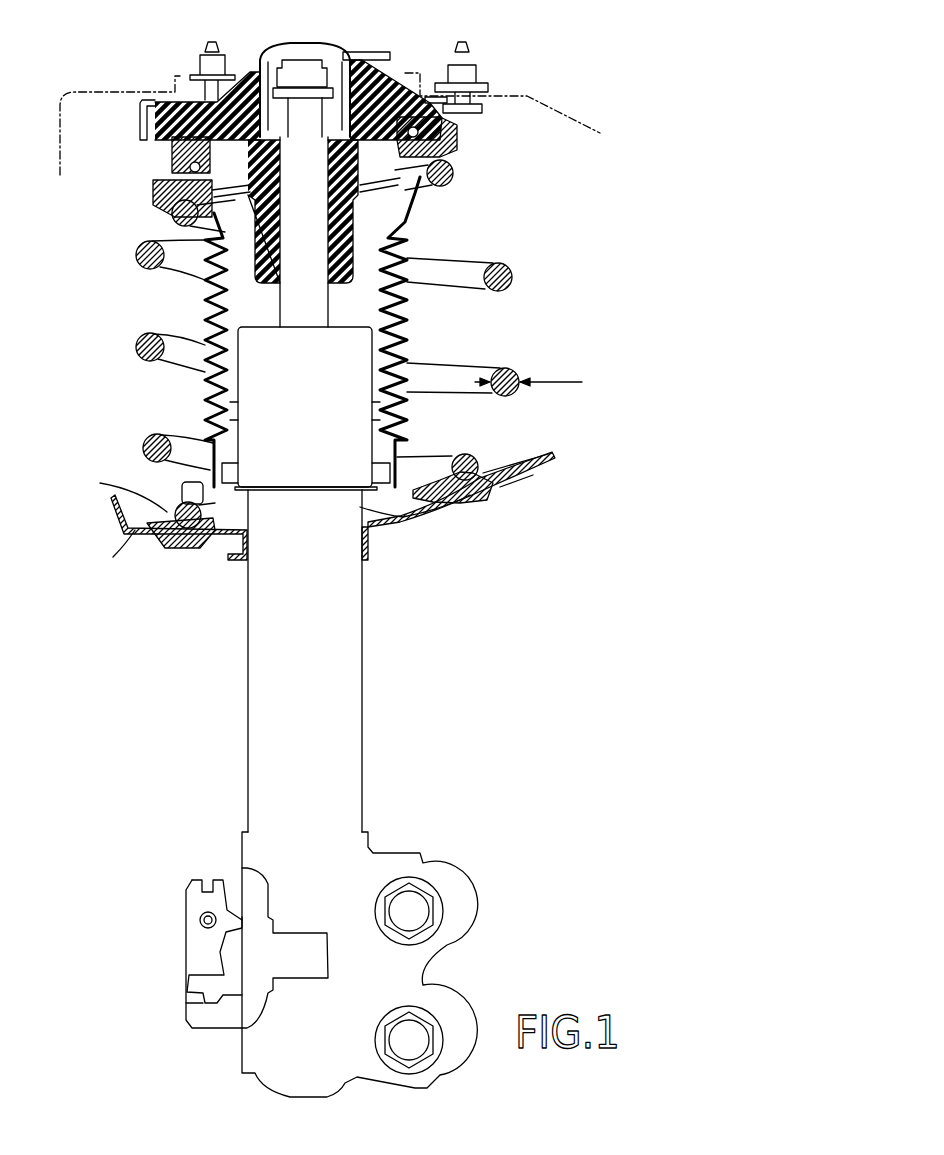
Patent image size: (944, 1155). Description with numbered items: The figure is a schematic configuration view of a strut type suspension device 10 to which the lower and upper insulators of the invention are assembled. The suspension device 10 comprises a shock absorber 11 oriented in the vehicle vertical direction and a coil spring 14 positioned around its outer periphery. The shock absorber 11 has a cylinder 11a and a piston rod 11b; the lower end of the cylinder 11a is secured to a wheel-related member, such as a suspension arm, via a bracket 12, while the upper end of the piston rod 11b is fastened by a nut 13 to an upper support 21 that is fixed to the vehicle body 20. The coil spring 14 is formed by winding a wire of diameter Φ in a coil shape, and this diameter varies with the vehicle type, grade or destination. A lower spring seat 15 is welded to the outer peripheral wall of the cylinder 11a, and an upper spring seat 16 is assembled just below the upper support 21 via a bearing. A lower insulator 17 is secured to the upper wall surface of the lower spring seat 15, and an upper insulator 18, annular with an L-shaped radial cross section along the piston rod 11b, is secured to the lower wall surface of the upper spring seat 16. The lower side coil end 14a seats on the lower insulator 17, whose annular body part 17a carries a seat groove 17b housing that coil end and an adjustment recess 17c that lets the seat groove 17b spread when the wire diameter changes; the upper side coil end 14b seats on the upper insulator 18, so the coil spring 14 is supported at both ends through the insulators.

The suspension device 10 is at (633, 185).
The shock absorber 11 is at (160, 728).
The cylinder 11a is at (248, 695).
The piston rod 11b is at (280, 322).
The bracket 12 is at (450, 908).
The nut 13 is at (312, 56).
The coil spring 14 is at (542, 250).
The lower side coil end 14a is at (167, 512).
The upper side coil end 14b is at (172, 212).
The lower spring seat 15 is at (550, 457).
The upper spring seat 16 is at (460, 142).
The lower insulator 17 is at (516, 440).
The body part 17a is at (150, 523).
The seat groove 17b is at (172, 550).
The adjustment recess 17c is at (223, 553).
The upper insulator 18 is at (168, 202).
The vehicle body 20 is at (128, 94).
The upper support 21 is at (378, 52).